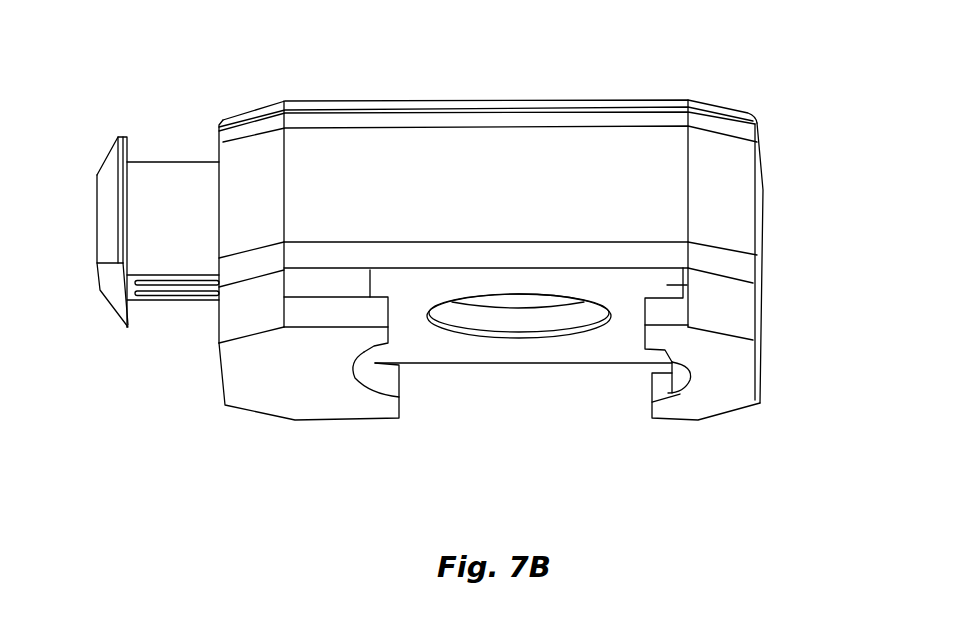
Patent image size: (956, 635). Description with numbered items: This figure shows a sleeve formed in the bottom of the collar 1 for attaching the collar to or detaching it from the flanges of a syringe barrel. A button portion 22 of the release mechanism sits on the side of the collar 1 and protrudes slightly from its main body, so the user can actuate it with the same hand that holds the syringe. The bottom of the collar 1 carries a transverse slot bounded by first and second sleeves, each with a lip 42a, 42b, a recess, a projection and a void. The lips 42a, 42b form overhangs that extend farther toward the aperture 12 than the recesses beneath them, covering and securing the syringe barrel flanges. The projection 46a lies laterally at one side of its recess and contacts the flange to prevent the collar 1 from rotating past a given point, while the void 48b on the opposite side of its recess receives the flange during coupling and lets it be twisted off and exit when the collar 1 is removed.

The collar 1 is at (675, 180).
The aperture 12 is at (523, 300).
The button portion 22 is at (78, 207).
The lip 42a is at (370, 355).
The lip 42b is at (688, 376).
The projection 46a is at (380, 283).
The void 48b is at (753, 297).